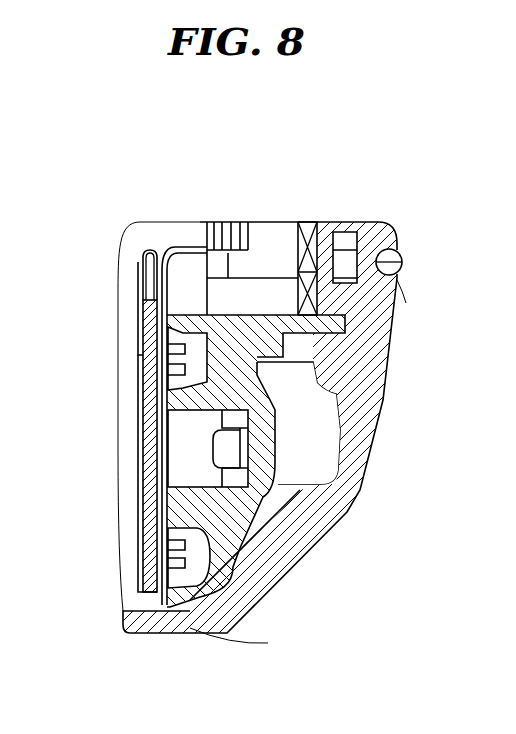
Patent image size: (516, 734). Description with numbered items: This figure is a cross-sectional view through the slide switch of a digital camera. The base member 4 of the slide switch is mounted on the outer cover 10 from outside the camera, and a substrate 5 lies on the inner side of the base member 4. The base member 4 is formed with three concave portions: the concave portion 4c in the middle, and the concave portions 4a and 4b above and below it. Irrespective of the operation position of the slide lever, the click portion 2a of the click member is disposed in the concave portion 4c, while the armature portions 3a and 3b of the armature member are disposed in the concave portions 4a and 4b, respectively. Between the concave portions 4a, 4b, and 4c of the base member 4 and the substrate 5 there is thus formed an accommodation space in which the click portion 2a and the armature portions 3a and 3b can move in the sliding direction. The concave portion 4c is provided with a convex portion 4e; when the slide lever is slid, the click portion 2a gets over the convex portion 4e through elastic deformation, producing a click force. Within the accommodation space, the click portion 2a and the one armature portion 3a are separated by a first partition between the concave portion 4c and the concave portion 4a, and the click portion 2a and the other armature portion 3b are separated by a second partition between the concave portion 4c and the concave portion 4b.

The outer cover 10 is at (305, 553).
The base member 4 is at (268, 325).
The concave portion 4a is at (199, 335).
The concave portion 4b is at (193, 545).
The concave portion 4c is at (185, 455).
The convex portion 4e is at (312, 483).
The click portion 2a is at (238, 452).
The armature portion 3a is at (172, 327).
The armature portion 3b is at (172, 570).
The substrate 5 is at (145, 368).